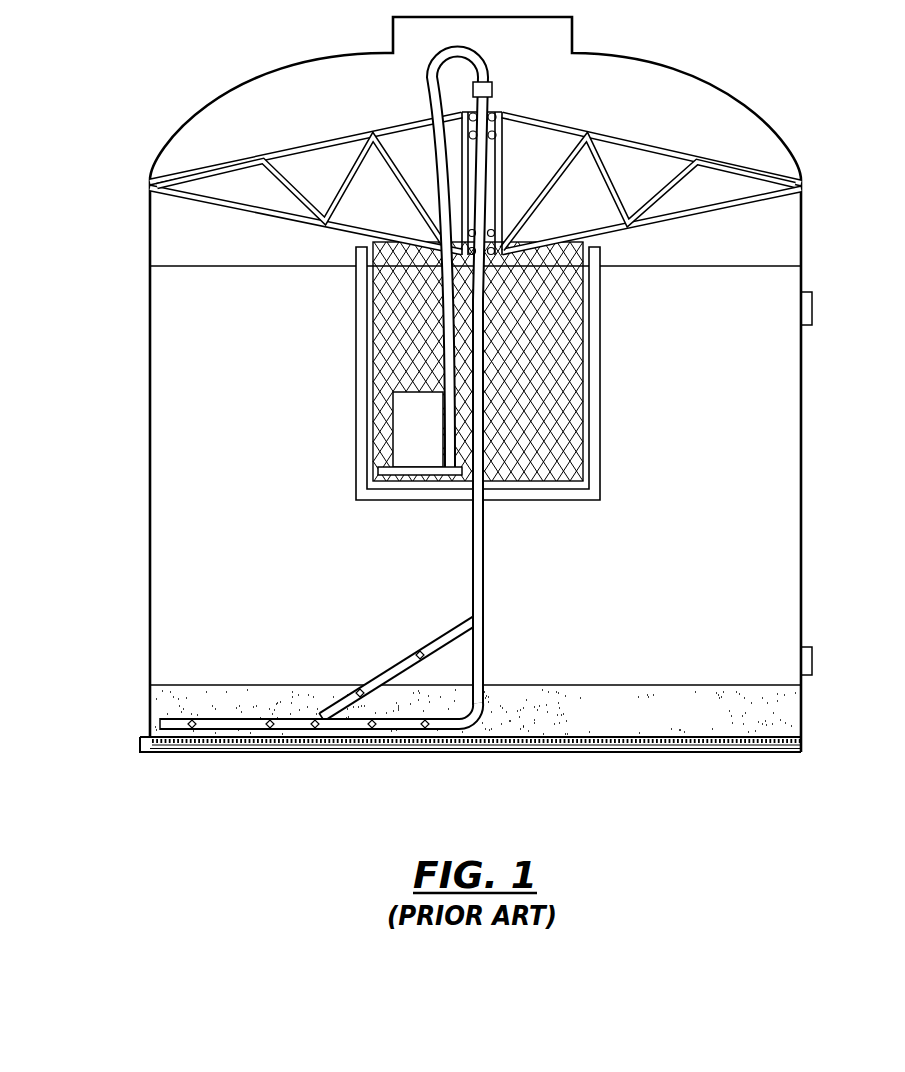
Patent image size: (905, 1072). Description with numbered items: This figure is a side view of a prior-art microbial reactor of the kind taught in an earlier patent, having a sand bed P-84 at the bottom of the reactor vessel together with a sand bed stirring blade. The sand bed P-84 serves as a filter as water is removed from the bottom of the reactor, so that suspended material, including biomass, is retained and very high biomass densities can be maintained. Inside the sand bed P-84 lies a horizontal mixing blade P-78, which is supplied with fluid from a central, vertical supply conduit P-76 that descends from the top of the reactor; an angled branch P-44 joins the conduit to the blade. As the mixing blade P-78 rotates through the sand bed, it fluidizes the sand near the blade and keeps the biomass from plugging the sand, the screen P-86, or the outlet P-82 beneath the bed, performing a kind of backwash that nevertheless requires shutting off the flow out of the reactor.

The central vertical supply conduit P-76 is at (484, 543).
The diagonal feed pipe P-44 is at (376, 722).
The mixing blade P-78 is at (255, 727).
The sand bed P-84 is at (530, 702).
The screen P-86 is at (433, 742).
The outlet P-82 is at (145, 747).